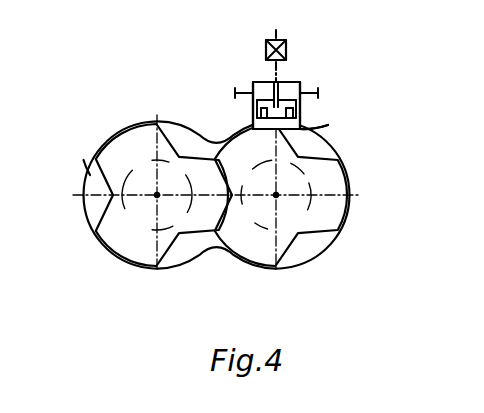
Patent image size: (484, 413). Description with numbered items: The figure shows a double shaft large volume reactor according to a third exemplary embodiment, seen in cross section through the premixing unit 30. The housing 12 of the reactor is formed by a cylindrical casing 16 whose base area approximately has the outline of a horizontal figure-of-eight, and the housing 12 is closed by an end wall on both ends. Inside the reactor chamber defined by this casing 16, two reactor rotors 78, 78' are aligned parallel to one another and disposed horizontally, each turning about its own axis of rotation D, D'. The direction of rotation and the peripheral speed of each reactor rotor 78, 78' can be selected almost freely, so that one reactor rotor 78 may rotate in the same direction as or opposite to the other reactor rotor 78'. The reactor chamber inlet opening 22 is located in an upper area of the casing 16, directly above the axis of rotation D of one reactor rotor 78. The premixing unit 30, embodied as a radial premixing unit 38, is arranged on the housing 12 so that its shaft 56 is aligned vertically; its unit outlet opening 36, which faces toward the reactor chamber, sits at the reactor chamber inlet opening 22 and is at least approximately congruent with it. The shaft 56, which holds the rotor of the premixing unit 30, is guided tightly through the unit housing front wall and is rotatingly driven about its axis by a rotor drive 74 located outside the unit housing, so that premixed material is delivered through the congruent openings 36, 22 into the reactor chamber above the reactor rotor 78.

The housing 12 is at (135, 125).
The casing 16 is at (90, 168).
The reactor chamber inlet opening 22 is at (303, 130).
The unit outlet opening 36 is at (303, 130).
The premixing unit 30 is at (303, 73).
The radial premixing unit 38 is at (306, 72).
The shaft 56 is at (272, 73).
The rotor drive 74 is at (271, 42).
The reactor rotor 78 is at (281, 217).
The reactor rotor 78' is at (162, 219).
The axis of rotation D is at (256, 255).
The axis of rotation D' is at (114, 241).